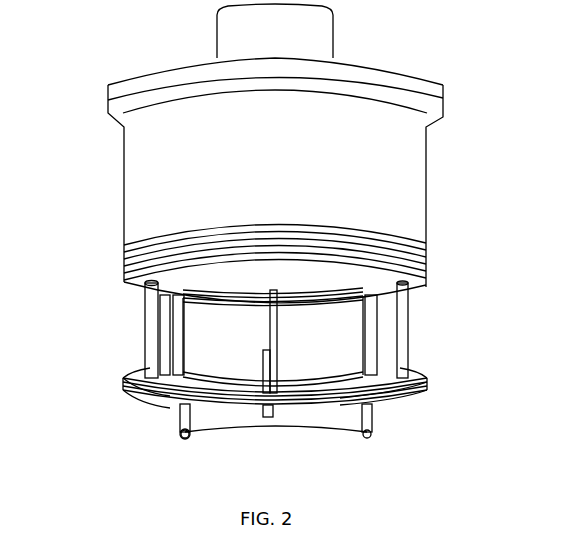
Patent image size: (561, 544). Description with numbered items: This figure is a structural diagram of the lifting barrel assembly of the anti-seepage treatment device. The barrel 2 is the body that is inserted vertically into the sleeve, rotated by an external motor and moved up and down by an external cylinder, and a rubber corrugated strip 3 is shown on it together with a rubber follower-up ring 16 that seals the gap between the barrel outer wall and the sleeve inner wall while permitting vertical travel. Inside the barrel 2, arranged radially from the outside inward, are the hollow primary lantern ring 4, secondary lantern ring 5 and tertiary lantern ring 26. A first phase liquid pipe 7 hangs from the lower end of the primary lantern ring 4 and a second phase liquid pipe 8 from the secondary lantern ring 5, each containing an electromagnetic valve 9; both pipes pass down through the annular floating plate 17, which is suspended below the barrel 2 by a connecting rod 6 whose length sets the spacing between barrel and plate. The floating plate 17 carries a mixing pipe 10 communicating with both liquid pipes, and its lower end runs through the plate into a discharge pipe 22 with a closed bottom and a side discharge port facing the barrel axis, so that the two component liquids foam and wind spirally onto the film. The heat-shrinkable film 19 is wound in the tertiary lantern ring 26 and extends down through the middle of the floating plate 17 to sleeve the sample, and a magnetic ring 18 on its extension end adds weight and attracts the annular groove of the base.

The barrel 2 is at (355, 210).
The rubber corrugated strip 3 is at (373, 245).
The primary lantern ring 4 is at (400, 278).
The secondary lantern ring 5 is at (385, 297).
The connecting rod 6 is at (400, 332).
The first phase liquid pipe 7 is at (410, 363).
The second phase liquid pipe 8 is at (395, 372).
The mixing pipe 10 is at (397, 390).
The discharge pipe 22 is at (268, 413).
The tertiary lantern ring 26 is at (172, 298).
The heat-shrinkable film 19 is at (150, 292).
The electromagnetic valve 9 is at (147, 302).
The floating plate 17 is at (145, 377).
The follower-up ring 16 is at (130, 381).
The magnetic ring 18 is at (170, 425).